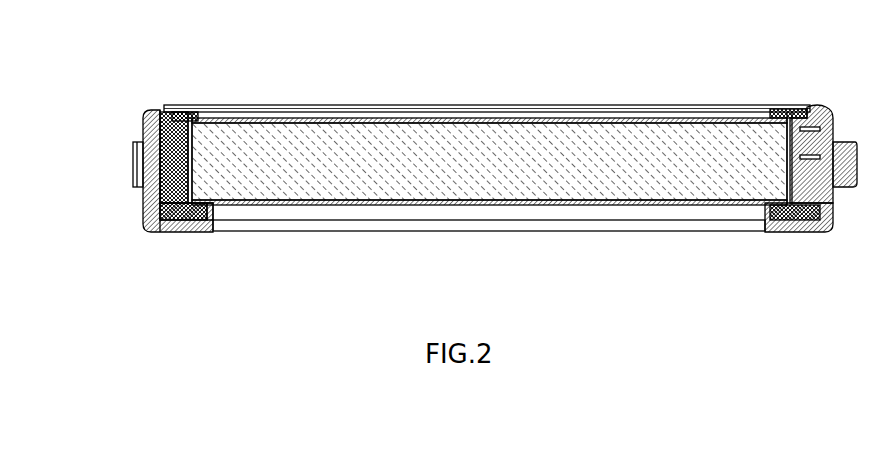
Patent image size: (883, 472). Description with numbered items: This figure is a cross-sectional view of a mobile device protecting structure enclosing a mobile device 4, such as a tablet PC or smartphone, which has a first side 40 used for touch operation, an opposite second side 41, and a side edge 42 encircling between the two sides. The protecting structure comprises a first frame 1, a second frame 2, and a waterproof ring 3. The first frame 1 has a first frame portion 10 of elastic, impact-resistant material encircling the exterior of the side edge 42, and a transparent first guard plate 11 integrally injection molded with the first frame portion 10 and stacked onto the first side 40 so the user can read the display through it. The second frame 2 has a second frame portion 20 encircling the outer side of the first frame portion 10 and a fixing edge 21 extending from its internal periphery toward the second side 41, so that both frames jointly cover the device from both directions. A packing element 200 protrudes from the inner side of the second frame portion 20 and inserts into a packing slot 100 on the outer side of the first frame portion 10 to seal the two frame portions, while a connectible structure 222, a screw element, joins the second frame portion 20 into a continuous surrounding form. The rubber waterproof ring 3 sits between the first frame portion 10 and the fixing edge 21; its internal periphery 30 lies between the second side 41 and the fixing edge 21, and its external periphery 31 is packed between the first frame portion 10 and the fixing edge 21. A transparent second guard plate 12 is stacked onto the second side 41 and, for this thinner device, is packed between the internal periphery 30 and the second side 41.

The packing slot 100 is at (160, 110).
The packing element 200 is at (134, 152).
The side edge 42 is at (200, 112).
The mobile device 4 is at (413, 130).
The first side 40 is at (528, 105).
The first guard plate 11 is at (612, 118).
The first frame portion 10 is at (775, 128).
The first frame 1 is at (812, 108).
The connectible structure 222 is at (847, 142).
The second frame portion 20 is at (143, 206).
The external periphery 31 is at (178, 222).
The internal periphery 30 is at (198, 222).
The fixing edge 21 is at (214, 222).
The waterproof ring 3 is at (220, 285).
The second side 41 is at (505, 206).
The second guard plate 12 is at (600, 204).
The second frame 2 is at (790, 232).